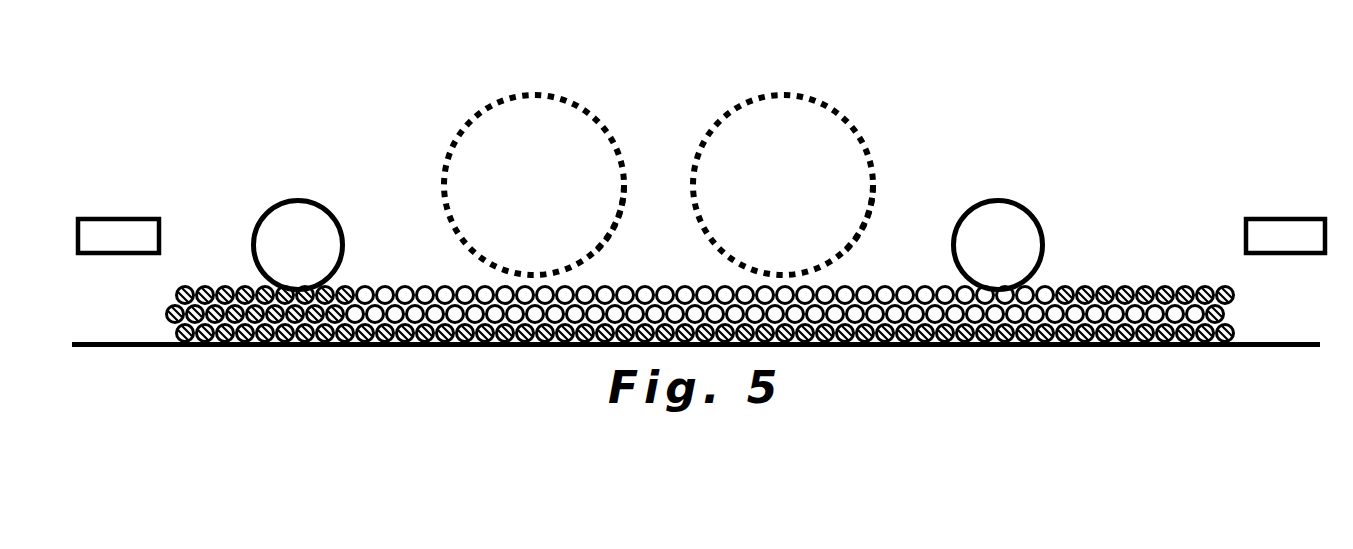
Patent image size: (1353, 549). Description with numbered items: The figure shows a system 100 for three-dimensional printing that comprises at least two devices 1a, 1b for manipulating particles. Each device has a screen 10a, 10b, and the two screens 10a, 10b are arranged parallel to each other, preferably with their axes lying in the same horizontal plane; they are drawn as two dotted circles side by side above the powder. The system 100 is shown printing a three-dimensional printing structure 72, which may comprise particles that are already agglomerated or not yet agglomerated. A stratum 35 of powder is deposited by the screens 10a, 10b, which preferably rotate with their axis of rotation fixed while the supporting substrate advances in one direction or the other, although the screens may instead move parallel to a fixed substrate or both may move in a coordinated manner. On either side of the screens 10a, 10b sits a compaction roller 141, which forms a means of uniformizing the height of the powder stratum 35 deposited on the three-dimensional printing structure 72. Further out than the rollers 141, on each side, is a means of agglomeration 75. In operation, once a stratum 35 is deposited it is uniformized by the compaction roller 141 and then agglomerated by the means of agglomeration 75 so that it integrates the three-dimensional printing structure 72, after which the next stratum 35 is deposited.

The system 100 is at (822, 56).
The device for manipulating particles 1a is at (492, 105).
The device for manipulating particles 1b is at (740, 107).
The screen 10a is at (610, 228).
The screen 10b is at (860, 230).
The compaction roller 141 is at (293, 200).
The means of agglomeration 75 is at (115, 218).
The three-dimensional printing structure 72 is at (1158, 270).
The stratum 35 is at (150, 313).